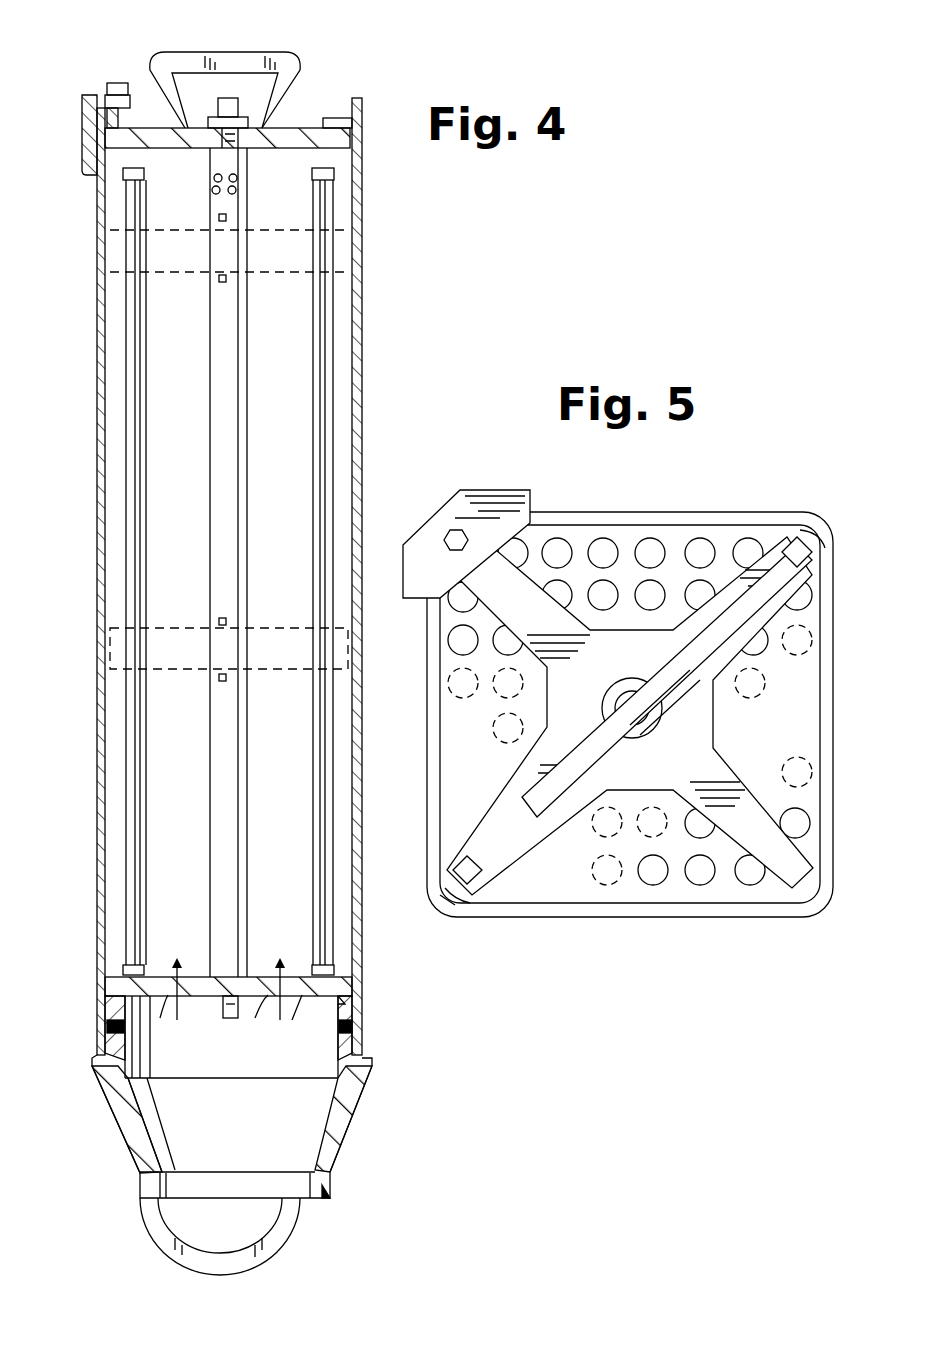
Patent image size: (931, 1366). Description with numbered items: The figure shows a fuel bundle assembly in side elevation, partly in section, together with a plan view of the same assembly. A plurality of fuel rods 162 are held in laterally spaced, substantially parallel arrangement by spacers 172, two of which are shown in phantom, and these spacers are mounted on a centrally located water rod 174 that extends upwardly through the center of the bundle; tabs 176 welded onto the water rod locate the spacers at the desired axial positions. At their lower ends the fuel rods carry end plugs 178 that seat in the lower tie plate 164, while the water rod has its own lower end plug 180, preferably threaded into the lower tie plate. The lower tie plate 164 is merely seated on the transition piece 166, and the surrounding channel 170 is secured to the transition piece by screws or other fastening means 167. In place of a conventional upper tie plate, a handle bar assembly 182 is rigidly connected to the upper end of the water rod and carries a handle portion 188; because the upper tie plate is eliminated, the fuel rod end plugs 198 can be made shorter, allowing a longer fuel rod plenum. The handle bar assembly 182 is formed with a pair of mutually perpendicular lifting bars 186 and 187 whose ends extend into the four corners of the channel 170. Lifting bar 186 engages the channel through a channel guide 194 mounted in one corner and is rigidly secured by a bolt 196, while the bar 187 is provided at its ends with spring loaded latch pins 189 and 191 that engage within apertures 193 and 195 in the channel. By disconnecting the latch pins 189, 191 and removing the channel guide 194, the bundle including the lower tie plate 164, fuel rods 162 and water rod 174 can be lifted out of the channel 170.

In FIG. 4, the fuel rods 162 is at (135, 478).
In FIG. 4, the lower tie plate 164 is at (250, 997).
In FIG. 4, the transition piece 166 is at (348, 1111).
In FIG. 4, the screws or other fastening means 167 is at (100, 1027).
In FIG. 4, the channel 170 is at (356, 441).
In FIG. 5, the channel 170 is at (824, 702).
In FIG. 4, the spacers 172 is at (177, 268).
In FIG. 4, the water rod 174 is at (228, 513).
In FIG. 4, the tabs 176 is at (227, 623).
In FIG. 4, the end plugs 178 is at (153, 953).
In FIG. 4, the lower end plug 180 is at (223, 1006).
In FIG. 4, the handle bar assembly 182 is at (305, 62).
In FIG. 5, the handle bar assembly 182 is at (512, 768).
In FIG. 5, the lifting bar 186 is at (705, 773).
In FIG. 5, the lifting bar 187 is at (493, 858).
In FIG. 5, the handle portion 188 is at (688, 655).
In FIG. 5, the spring loaded latch pin 189 is at (442, 900).
In FIG. 5, the spring loaded latch pin 191 is at (822, 522).
In FIG. 5, the aperture 193 is at (470, 913).
In FIG. 4, the channel guide 194 is at (88, 118).
In FIG. 5, the channel guide 194 is at (425, 555).
In FIG. 5, the aperture 195 is at (830, 557).
In FIG. 4, the bolt 196 is at (113, 83).
In FIG. 4, the fuel rod end plugs 198 is at (133, 172).